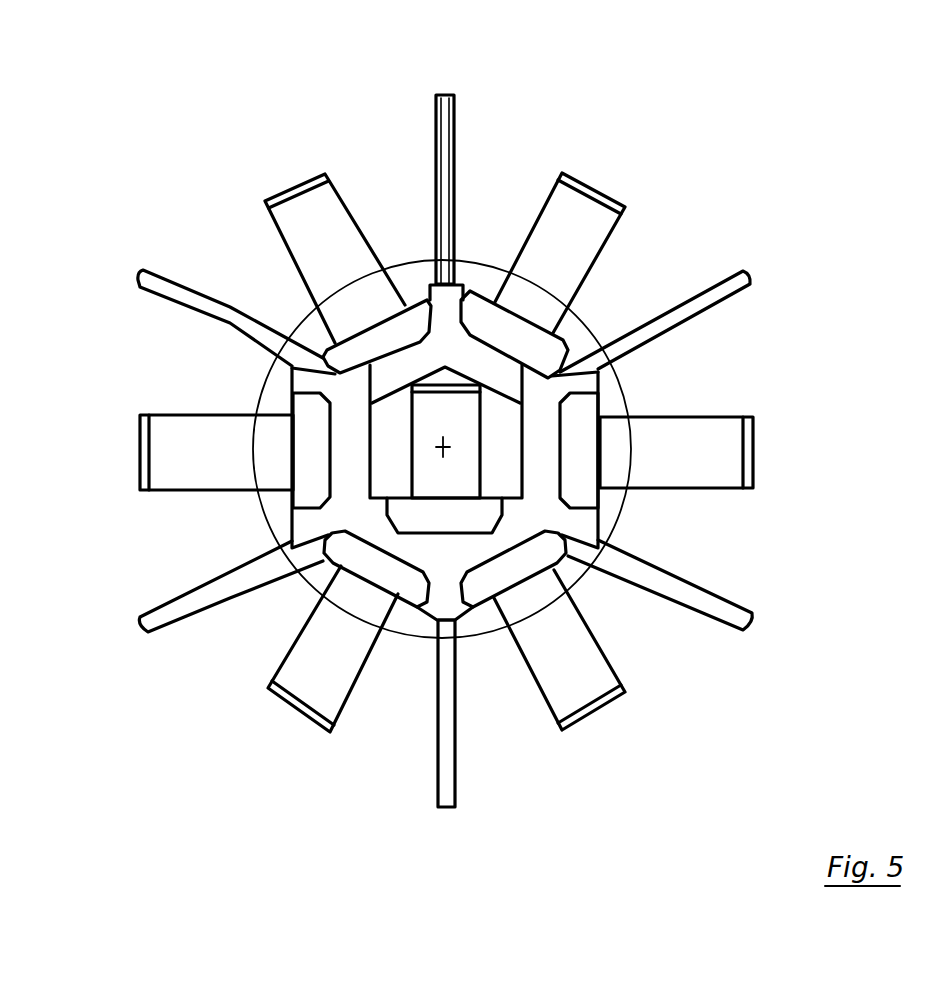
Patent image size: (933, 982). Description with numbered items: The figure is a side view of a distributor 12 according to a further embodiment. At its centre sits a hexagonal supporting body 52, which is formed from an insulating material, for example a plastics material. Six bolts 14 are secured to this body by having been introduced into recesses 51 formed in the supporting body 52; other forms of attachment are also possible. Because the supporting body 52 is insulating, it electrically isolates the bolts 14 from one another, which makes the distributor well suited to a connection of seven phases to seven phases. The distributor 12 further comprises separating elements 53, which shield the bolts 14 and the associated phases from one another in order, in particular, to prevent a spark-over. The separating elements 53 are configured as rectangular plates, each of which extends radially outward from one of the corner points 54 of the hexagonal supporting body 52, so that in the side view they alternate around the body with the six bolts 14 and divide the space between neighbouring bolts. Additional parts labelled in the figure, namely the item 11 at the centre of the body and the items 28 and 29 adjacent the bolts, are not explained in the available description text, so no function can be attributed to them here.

The rotor axis / center 11 is at (443, 455).
The distributor 12 is at (175, 117).
The bolts 14 is at (305, 205).
The pole pieces 28 is at (333, 293).
The lower right magnet block 29 is at (596, 562).
The recesses 51 is at (330, 370).
The supporting body 52 is at (582, 525).
The separating elements 53 is at (455, 105).
The corner points 54 is at (458, 282).